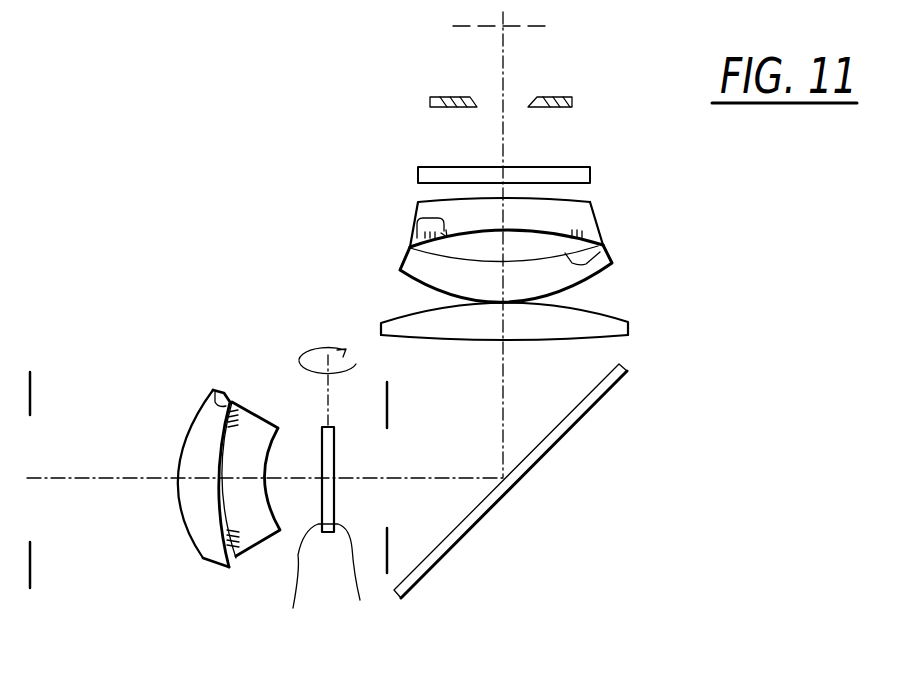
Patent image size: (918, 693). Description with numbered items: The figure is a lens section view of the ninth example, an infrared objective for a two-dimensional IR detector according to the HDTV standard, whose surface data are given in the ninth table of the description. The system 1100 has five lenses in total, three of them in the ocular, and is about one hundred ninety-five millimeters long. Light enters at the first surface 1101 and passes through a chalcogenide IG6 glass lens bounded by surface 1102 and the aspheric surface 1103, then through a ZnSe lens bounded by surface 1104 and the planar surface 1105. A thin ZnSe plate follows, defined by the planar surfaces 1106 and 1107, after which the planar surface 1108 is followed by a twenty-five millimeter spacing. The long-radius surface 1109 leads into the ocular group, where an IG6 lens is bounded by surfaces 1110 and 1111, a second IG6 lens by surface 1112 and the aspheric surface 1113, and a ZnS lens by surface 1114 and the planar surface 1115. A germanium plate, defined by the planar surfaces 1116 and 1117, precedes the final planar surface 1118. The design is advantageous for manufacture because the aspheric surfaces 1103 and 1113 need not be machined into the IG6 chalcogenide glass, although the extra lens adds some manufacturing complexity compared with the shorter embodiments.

The lens housing 1100 is at (30, 390).
The first optical surface 1101 is at (203, 558).
The second optical surface 1102 is at (218, 392).
The aspheric surface 1103 is at (235, 557).
The fourth optical surface 1104 is at (275, 432).
The planar surface 1105 is at (353, 533).
The planar surface 1106 is at (311, 581).
The planar surface 1107 is at (386, 397).
The planar surface 1108 is at (435, 557).
The ninth optical surface 1109 is at (625, 340).
The tenth optical surface 1110 is at (612, 314).
The eleventh optical surface 1111 is at (410, 276).
The twelfth optical surface 1112 is at (600, 248).
The aspheric surface 1113 is at (415, 225).
The fourteenth optical surface 1114 is at (430, 202).
The planar surface 1115 is at (591, 202).
The planar surface 1116 is at (590, 172).
The planar surface 1117 is at (566, 107).
The planar surface 1118 is at (542, 27).